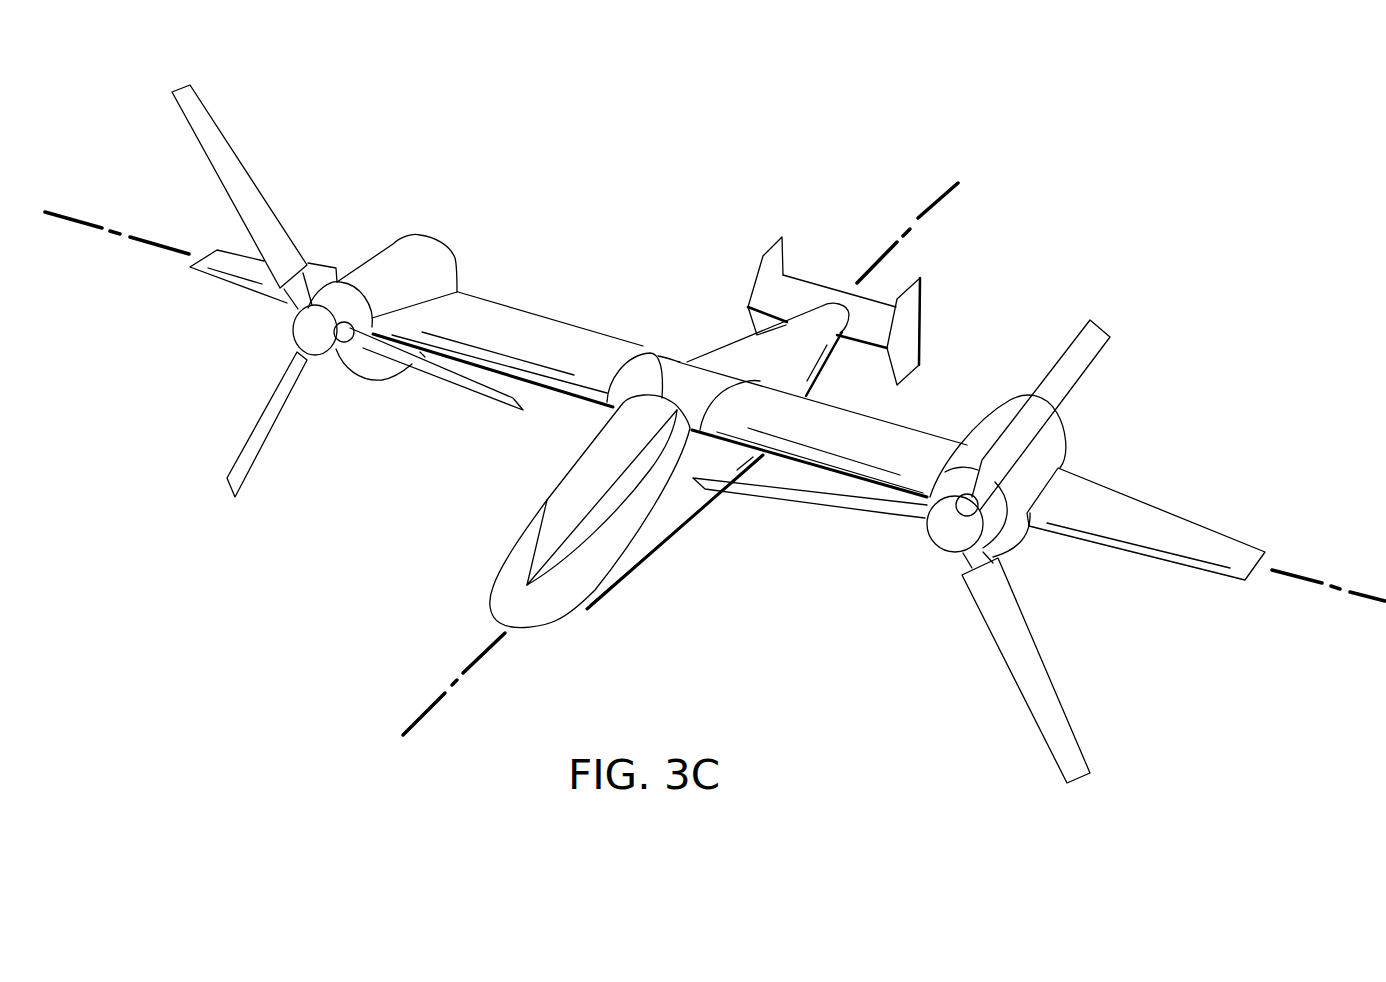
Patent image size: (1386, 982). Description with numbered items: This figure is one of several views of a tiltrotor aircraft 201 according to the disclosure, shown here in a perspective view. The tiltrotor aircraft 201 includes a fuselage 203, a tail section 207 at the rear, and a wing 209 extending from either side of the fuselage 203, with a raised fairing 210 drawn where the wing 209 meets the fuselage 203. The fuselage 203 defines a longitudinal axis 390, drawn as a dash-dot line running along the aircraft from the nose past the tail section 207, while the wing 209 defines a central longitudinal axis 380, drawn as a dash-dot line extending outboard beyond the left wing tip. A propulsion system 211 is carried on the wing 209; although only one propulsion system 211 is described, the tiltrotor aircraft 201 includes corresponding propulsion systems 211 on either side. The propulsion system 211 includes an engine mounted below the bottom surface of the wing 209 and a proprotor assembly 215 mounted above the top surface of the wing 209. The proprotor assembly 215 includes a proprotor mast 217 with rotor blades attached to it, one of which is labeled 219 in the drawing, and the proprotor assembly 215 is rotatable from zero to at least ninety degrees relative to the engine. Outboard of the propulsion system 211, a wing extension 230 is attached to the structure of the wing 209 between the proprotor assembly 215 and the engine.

The tiltrotor aircraft 201 is at (1075, 146).
The fuselage 203 is at (546, 636).
The tail section 207 is at (923, 313).
The wing 209 is at (538, 316).
The fuselage wing fairing 210 is at (645, 354).
The propulsion system 211 is at (1068, 441).
The proprotor assembly 215 is at (926, 537).
The proprotor mast 217 is at (1023, 547).
The rotor blade 219 is at (1008, 671).
The wing extension 230 is at (1197, 530).
The central longitudinal axis 380 is at (73, 223).
The longitudinal axis 390 is at (424, 707).